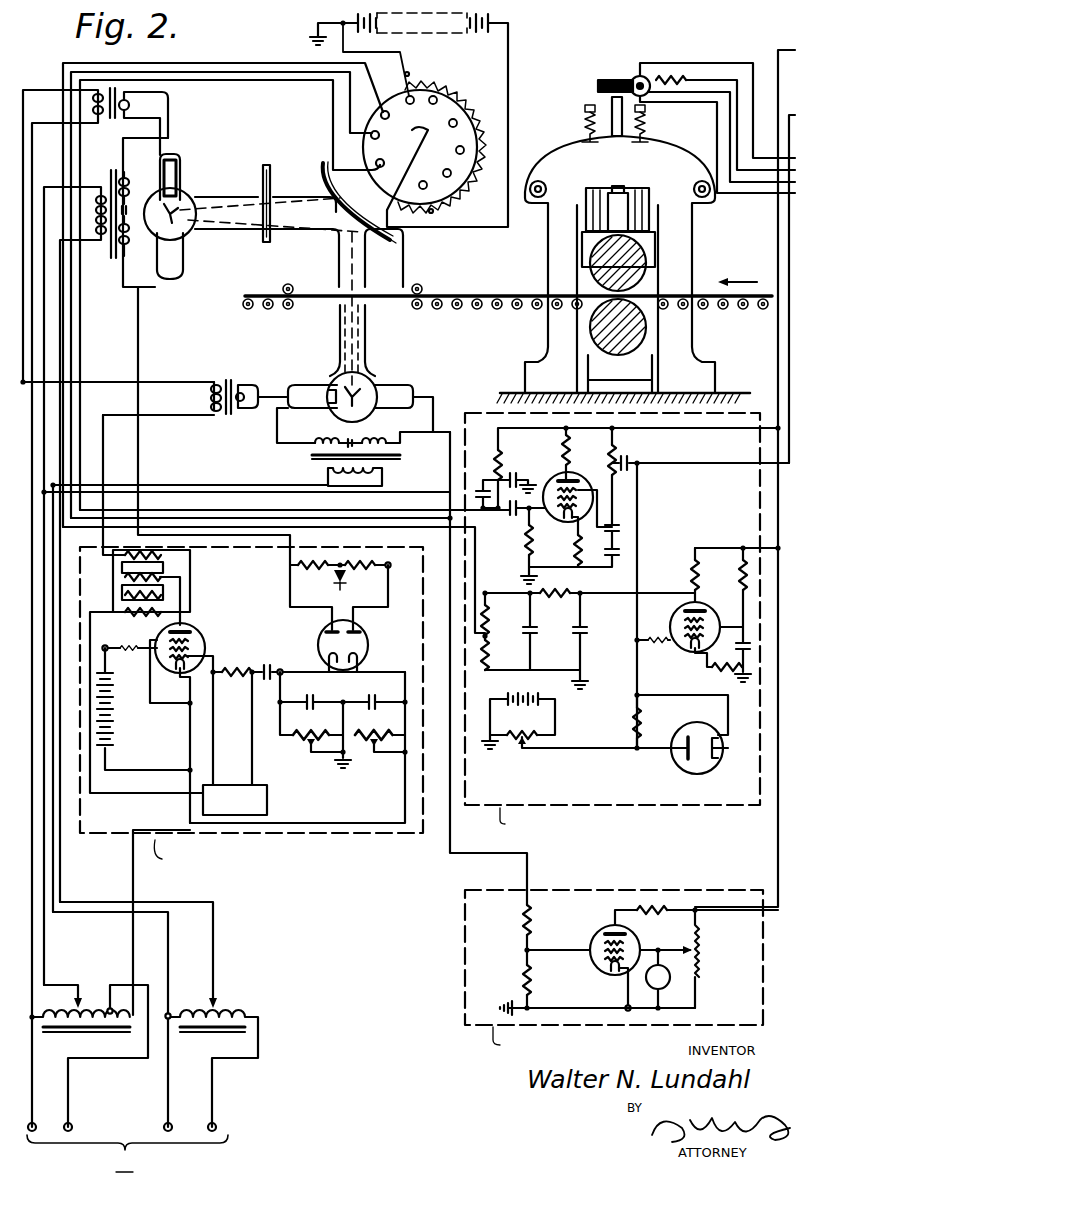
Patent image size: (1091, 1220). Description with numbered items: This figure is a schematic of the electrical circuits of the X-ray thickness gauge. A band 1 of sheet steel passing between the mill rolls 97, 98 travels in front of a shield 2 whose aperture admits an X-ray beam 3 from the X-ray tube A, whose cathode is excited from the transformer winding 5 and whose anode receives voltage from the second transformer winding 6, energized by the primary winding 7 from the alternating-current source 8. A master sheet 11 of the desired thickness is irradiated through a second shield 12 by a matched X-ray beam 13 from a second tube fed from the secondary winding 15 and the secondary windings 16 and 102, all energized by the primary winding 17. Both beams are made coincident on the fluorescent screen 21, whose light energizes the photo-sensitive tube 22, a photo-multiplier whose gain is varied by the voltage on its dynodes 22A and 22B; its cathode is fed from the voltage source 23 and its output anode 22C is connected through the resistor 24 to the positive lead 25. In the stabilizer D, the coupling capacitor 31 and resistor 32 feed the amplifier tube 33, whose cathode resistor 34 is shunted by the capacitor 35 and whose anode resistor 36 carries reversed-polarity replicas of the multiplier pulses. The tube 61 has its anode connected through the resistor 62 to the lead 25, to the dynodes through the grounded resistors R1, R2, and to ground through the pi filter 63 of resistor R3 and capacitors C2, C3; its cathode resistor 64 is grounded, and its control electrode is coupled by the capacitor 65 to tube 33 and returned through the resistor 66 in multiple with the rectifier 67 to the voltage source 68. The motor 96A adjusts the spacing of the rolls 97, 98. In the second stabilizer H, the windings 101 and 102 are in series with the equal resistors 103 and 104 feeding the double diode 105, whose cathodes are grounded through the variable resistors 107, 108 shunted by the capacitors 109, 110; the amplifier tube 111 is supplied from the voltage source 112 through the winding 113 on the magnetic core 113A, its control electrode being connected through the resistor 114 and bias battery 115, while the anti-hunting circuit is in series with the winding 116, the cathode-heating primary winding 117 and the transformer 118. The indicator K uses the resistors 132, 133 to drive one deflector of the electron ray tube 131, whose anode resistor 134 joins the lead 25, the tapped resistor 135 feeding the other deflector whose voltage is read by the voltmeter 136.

The band 1 is at (485, 294).
The shield 2 is at (366, 360).
The X-ray beam 3 is at (360, 325).
The transformer winding 5 is at (240, 382).
The second transformer winding 6 is at (387, 440).
The primary winding 7 is at (355, 477).
The alternating-current power source 8 is at (178, 180).
The master sheet 11 is at (264, 168).
The second shield 12 is at (246, 196).
The X-ray beam 13 is at (288, 196).
The secondary winding 15 is at (129, 105).
The secondary winding 16 is at (119, 250).
The primary winding 17 is at (101, 180).
The fluorescent screen 21 is at (328, 170).
The photo-sensitive tube 22 is at (425, 125).
The dynode 22A is at (389, 116).
The dynode 22B is at (379, 137).
The output anode 22C is at (378, 168).
The voltage source 23 is at (452, 34).
The resistor 24 is at (493, 480).
The lead 25 is at (498, 432).
The coupling capacitor 31 is at (516, 514).
The resistor 32 is at (526, 544).
The amplifier tube 33 is at (560, 480).
The cathode resistor 34 is at (572, 553).
The capacitor 35 is at (608, 567).
The resistor 36 is at (570, 450).
The tube 61 is at (706, 608).
The resistor 62 is at (690, 566).
The pi filter 63 is at (614, 630).
The cathode resistor 64 is at (714, 673).
The capacitor 65 is at (634, 465).
The resistor 66 is at (634, 716).
The rectifier 67 is at (694, 729).
The voltage source 68 is at (553, 722).
The direct-current motor 96A is at (632, 78).
The roll 97 is at (634, 258).
The roll 98 is at (643, 340).
The winding 101 is at (323, 440).
The secondary winding 102 is at (132, 176).
The resistor 103 is at (368, 595).
The resistor 104 is at (318, 595).
The electron tube 105 is at (366, 640).
The variable resistor 107 is at (372, 731).
The variable resistor 108 is at (311, 731).
The capacitor 109 is at (368, 697).
The capacitor 110 is at (311, 696).
The amplifier tube 111 is at (198, 639).
The voltage source 112 is at (111, 729).
The winding 113 is at (163, 568).
The magnetic core 113A is at (165, 589).
The resistor 114 is at (238, 668).
The bias battery 115 is at (269, 667).
The winding 116 is at (168, 553).
The primary winding 117 is at (218, 384).
The transformer 118 is at (82, 1056).
The electron ray tube 131 is at (636, 943).
The resistor 132 is at (524, 930).
The resistor 133 is at (524, 978).
The resistor 134 is at (640, 908).
The resistor 135 is at (701, 955).
The direct-current voltmeter 136 is at (661, 990).
The grounded resistor R1 is at (494, 616).
The grounded resistor R2 is at (530, 655).
The resistor R3 is at (562, 598).
The capacitor C2 is at (586, 634).
The capacitor C3 is at (536, 632).
The X-ray tube A is at (369, 332).
The stabilizer D is at (468, 806).
The tandem X-ray stabilizer H is at (108, 846).
The indicator K is at (465, 1010).